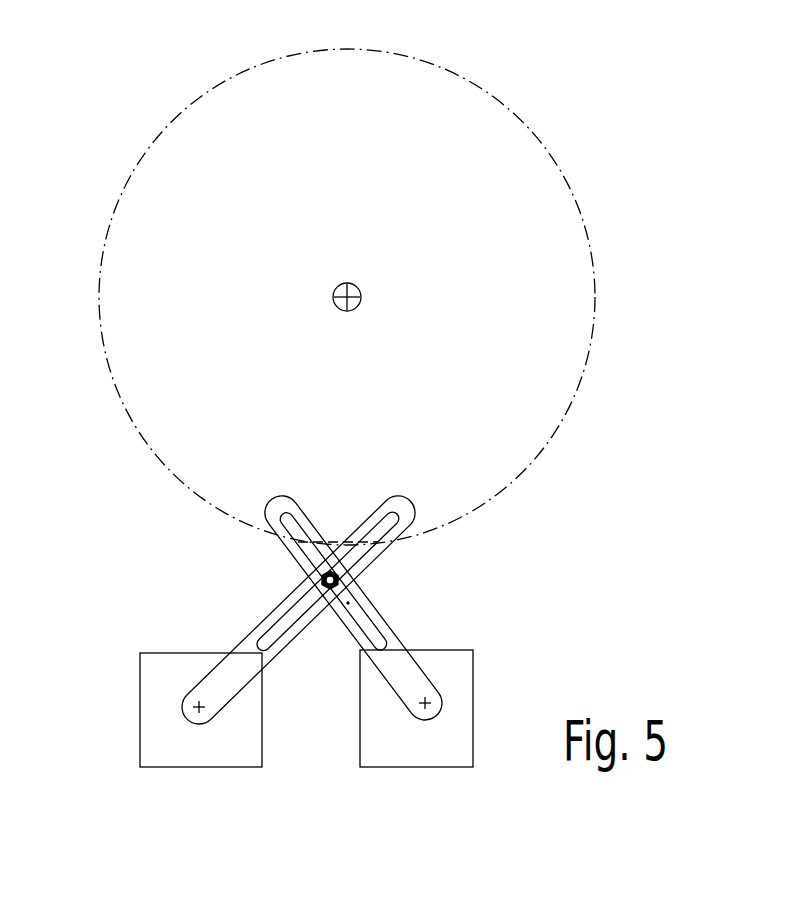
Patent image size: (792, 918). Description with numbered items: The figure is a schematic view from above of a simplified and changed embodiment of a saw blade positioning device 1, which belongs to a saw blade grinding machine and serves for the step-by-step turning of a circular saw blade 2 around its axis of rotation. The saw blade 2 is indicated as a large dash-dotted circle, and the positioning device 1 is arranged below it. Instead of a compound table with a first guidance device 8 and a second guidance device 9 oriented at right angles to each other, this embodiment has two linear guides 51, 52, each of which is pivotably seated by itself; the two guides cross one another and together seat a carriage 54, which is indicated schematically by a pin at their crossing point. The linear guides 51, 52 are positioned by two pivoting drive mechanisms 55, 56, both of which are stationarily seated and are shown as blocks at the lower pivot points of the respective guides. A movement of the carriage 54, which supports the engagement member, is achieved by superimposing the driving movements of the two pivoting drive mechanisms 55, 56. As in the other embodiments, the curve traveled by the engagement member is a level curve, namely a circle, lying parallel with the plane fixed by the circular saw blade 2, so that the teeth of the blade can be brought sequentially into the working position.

The saw blade positioning device 1 is at (383, 680).
The circular saw blade 2 is at (597, 275).
The first guidance device 8 is at (192, 555).
The second guidance device 9 is at (518, 613).
The linear guide 51 is at (285, 584).
The linear guide 52 is at (375, 605).
The carriage 54 is at (350, 567).
The pivoting drive mechanism 55 is at (212, 737).
The pivoting drive mechanism 56 is at (417, 740).